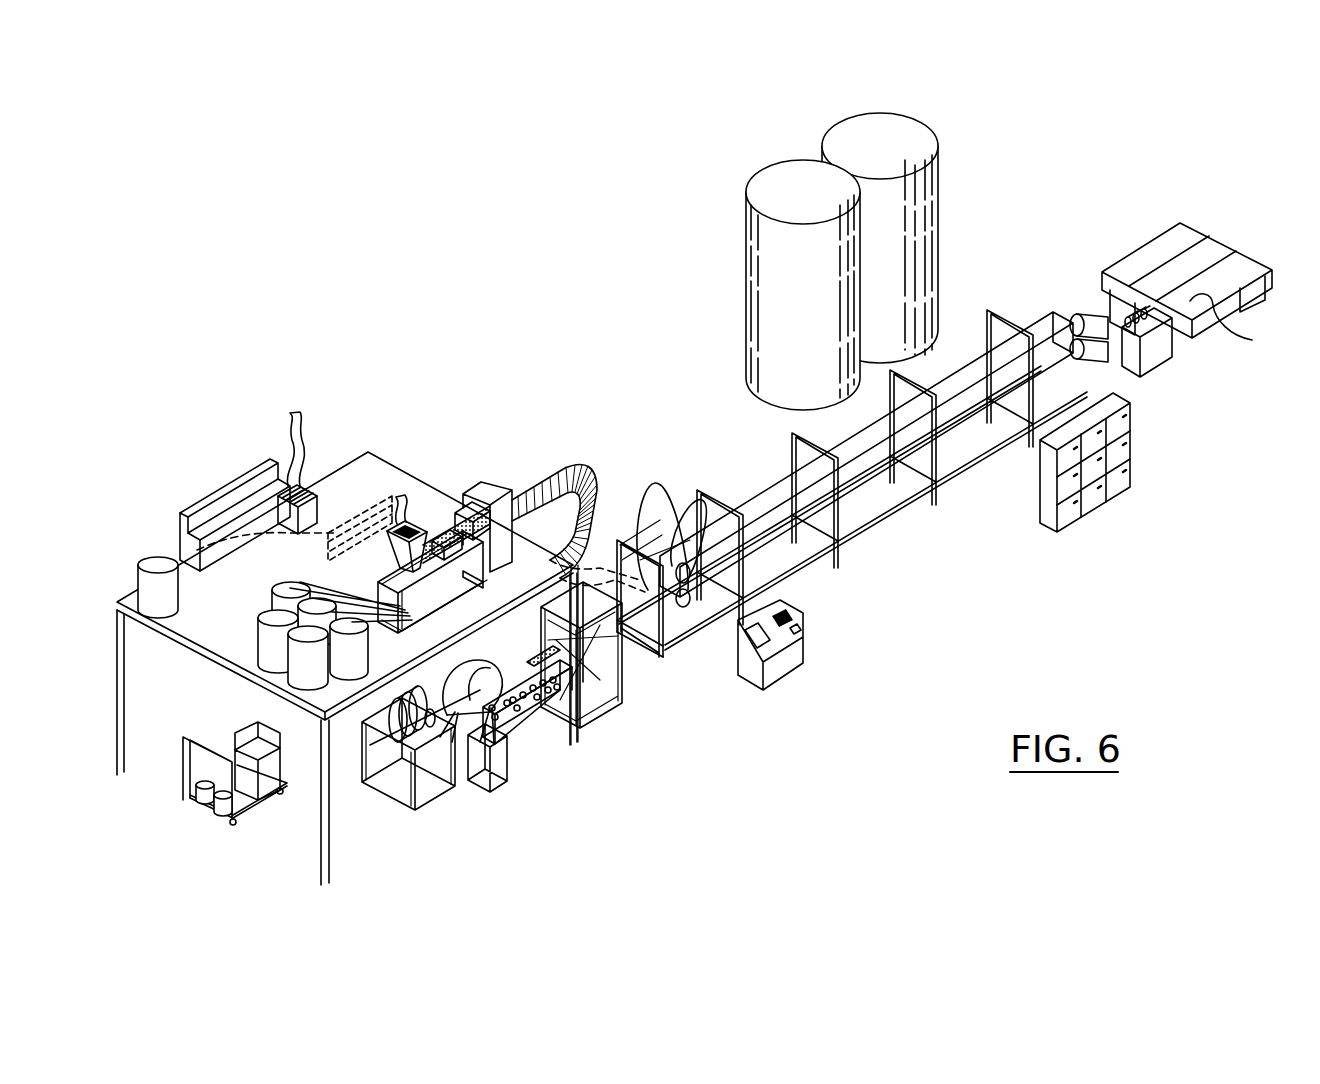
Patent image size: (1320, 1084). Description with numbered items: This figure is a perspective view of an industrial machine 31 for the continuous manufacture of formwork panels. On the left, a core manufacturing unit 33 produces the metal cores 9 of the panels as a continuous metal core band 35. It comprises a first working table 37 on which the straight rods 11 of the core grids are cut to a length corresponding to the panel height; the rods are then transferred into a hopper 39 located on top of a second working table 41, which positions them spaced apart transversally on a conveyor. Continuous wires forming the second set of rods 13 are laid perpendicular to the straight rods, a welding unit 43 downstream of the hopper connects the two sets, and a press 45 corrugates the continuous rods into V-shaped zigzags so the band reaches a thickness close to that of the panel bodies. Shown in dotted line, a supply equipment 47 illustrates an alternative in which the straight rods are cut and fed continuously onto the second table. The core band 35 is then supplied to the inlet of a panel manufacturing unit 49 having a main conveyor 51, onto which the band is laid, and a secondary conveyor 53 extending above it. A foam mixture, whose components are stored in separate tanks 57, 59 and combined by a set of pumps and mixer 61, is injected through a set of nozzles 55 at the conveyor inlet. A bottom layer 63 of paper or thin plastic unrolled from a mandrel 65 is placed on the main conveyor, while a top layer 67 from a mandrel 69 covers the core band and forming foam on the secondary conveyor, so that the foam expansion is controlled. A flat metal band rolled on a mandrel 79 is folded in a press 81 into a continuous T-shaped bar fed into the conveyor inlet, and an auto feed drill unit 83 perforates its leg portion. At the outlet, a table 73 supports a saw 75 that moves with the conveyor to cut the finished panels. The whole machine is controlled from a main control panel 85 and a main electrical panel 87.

The metal core 9 is at (440, 596).
The straight rods 11 is at (340, 460).
The second set of rods 13 is at (325, 580).
The industrial machine 31 is at (1078, 172).
The core manufacturing unit 33 is at (410, 425).
The continuous metal core band 35 is at (562, 470).
The first working table 37 is at (222, 485).
The hopper 39 is at (418, 545).
The second working table 41 is at (420, 520).
The welding unit 43 is at (478, 578).
The press 45 is at (490, 492).
The supply equipment 47 is at (365, 515).
The panel manufacturing unit 49 is at (905, 525).
The main conveyor 51 is at (800, 560).
The secondary conveyor 53 is at (765, 522).
The set of nozzles 55 is at (620, 680).
The tank 57 is at (930, 240).
The tank 59 is at (755, 265).
The pumps and mixer 61 is at (270, 808).
The bottom layer 63 is at (522, 680).
The mandrel 65 is at (458, 671).
The top layer 67 is at (678, 640).
The mandrel 69 is at (680, 520).
The table 73 is at (1178, 245).
The saw 75 is at (1252, 340).
The mandrel 79 is at (440, 797).
The press 81 is at (553, 698).
The auto feed drill unit 83 is at (1155, 345).
The main control panel 85 is at (790, 665).
The main electrical panel 87 is at (1135, 462).